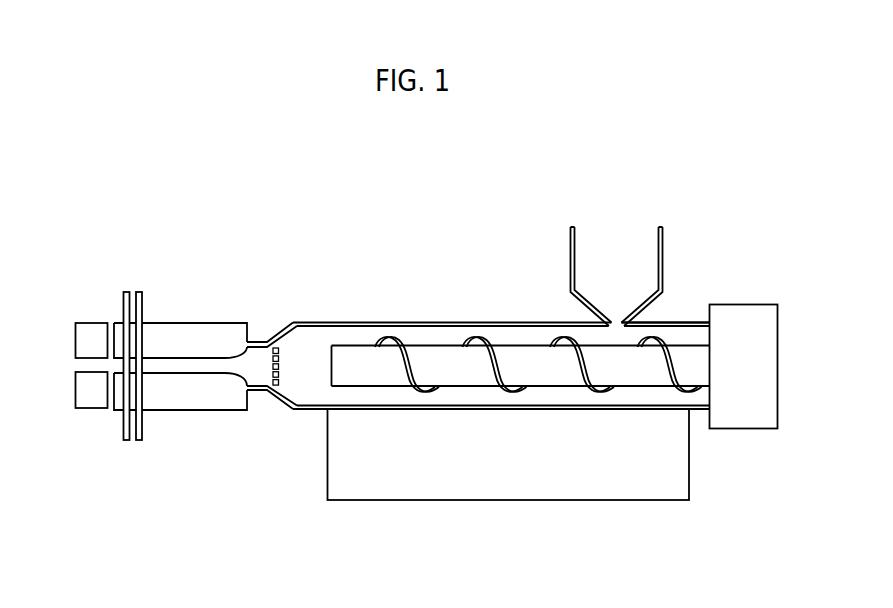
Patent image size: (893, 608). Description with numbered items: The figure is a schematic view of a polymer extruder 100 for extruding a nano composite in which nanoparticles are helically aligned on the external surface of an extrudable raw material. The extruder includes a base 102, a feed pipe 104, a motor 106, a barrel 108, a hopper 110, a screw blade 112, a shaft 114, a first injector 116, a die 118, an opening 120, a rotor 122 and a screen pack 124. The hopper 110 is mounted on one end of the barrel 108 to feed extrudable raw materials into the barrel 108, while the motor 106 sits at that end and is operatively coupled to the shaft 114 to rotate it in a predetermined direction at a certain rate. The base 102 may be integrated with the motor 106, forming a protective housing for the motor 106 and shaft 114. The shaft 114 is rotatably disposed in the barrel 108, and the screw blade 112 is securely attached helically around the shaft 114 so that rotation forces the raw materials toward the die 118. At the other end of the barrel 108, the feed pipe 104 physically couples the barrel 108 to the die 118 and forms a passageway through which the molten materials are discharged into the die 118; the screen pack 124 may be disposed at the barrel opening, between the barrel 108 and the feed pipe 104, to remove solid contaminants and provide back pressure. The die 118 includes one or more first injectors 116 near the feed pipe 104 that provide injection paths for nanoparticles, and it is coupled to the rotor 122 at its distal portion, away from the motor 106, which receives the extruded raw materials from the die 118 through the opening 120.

The polymer extruder 100 is at (208, 182).
The base 102 is at (650, 501).
The feed pipe 104 is at (282, 402).
The motor 106 is at (745, 303).
The barrel 108 is at (693, 320).
The hopper 110 is at (613, 237).
The screw blade 112 is at (490, 343).
The shaft 114 is at (428, 340).
The first injector 116 is at (128, 290).
The die 118 is at (205, 321).
The opening 120 is at (77, 367).
The rotor 122 is at (90, 320).
The screen pack 124 is at (275, 346).